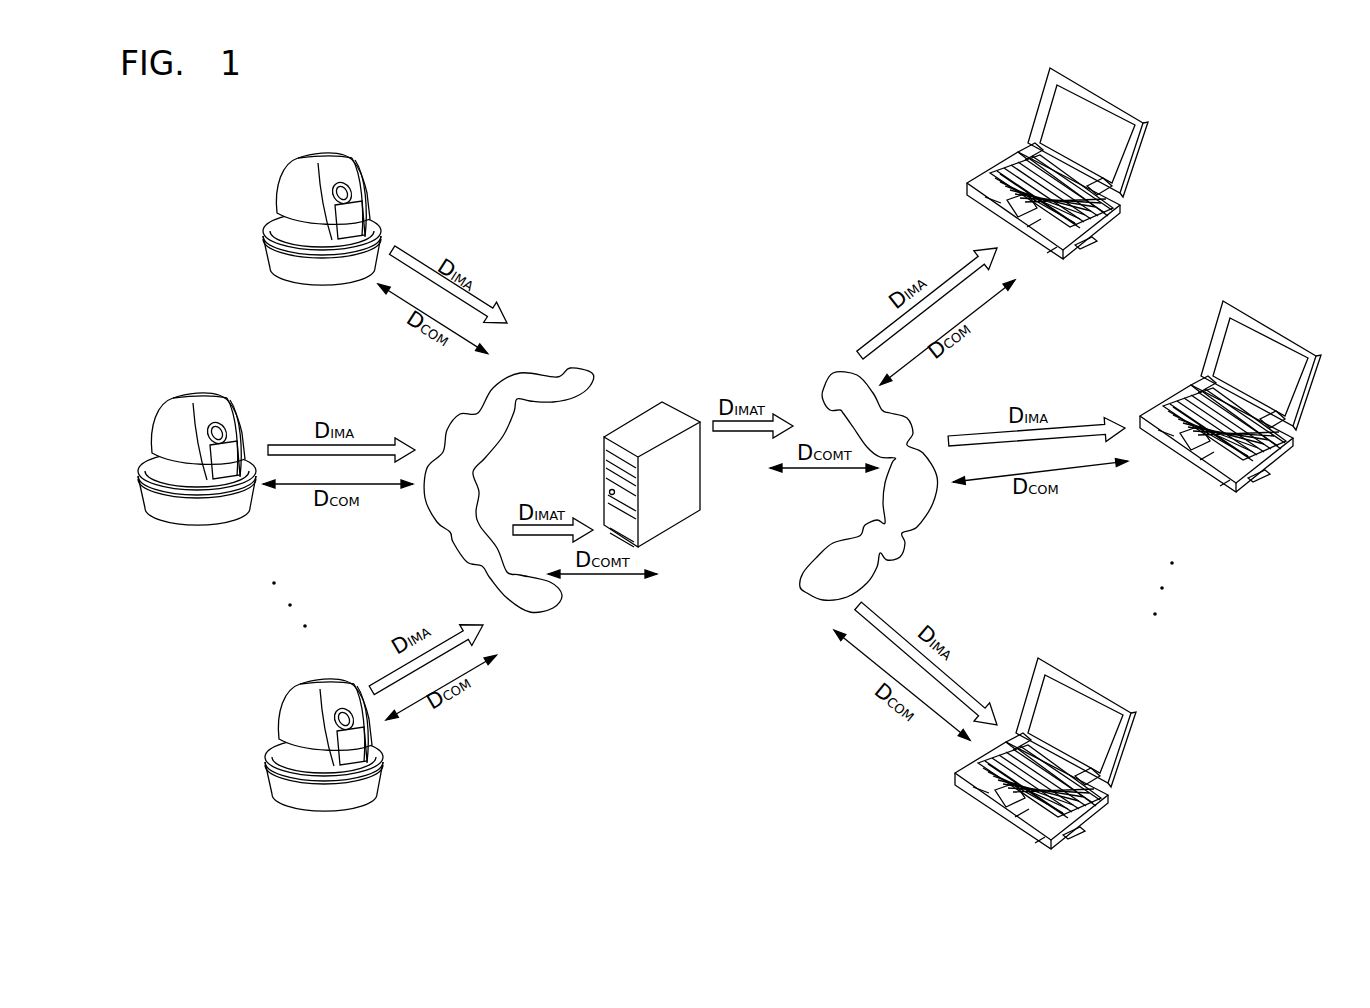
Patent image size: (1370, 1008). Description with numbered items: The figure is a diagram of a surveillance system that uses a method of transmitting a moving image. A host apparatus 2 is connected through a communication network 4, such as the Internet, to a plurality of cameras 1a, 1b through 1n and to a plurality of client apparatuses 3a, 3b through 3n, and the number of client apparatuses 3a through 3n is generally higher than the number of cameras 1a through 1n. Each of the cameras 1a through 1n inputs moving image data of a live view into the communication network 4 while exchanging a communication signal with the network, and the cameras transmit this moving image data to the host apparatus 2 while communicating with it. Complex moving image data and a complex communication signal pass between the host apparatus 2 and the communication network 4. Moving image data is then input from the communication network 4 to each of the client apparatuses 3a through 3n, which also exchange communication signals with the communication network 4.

The camera 1a is at (292, 272).
The camera 1b is at (170, 510).
The camera 1n is at (297, 798).
The host apparatus 2 is at (663, 400).
The client apparatus 3a is at (997, 172).
The client apparatus 3b is at (1170, 407).
The client apparatus 3n is at (967, 797).
The communication network 4 is at (571, 368).